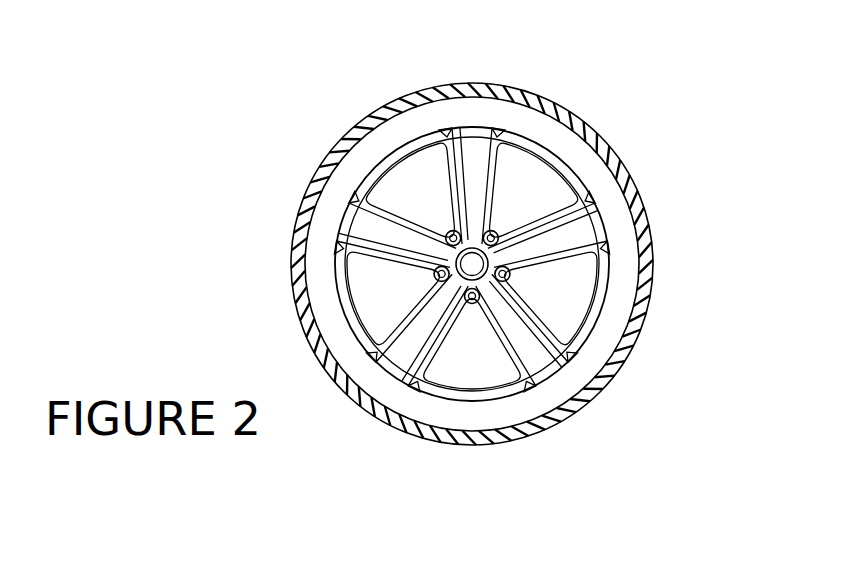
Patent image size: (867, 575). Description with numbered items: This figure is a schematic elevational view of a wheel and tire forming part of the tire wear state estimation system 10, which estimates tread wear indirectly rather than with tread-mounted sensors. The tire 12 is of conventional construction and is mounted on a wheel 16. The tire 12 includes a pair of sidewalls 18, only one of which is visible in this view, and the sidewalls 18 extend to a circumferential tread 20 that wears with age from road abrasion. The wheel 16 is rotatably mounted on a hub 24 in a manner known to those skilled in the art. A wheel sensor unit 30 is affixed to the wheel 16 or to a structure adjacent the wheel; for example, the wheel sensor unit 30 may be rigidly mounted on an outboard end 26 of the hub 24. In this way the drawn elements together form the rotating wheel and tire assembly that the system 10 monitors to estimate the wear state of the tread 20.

The tire wear state estimation system 10 is at (712, 84).
The tire 12 is at (580, 117).
The wheel 16 is at (588, 222).
The sidewall 18 is at (503, 115).
The circumferential tread 20 is at (480, 82).
The hub 24 is at (530, 245).
The outboard end of the hub 26 is at (548, 290).
The wheel sensor unit 30 is at (345, 250).